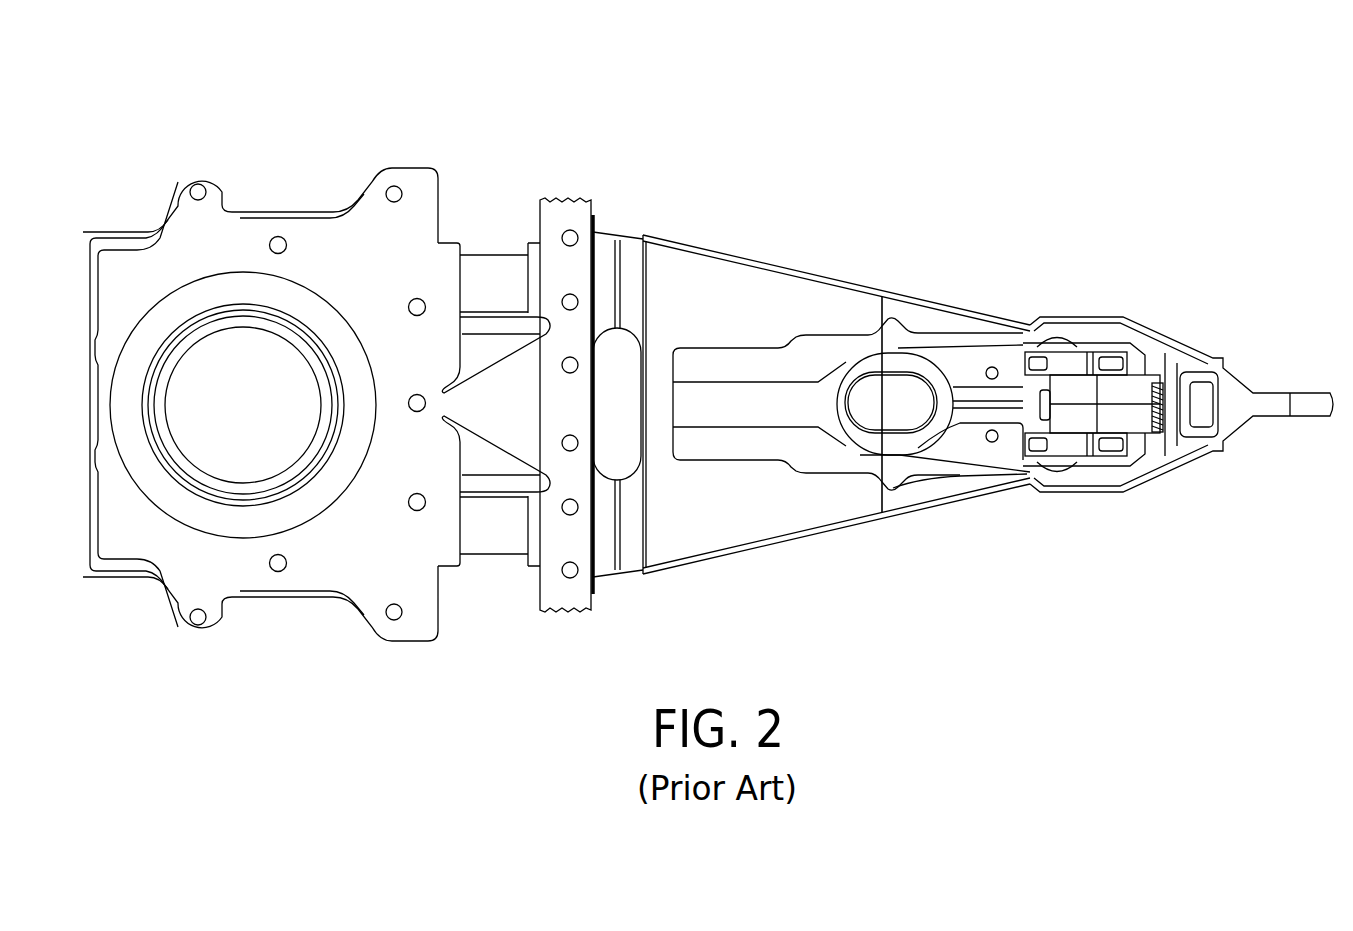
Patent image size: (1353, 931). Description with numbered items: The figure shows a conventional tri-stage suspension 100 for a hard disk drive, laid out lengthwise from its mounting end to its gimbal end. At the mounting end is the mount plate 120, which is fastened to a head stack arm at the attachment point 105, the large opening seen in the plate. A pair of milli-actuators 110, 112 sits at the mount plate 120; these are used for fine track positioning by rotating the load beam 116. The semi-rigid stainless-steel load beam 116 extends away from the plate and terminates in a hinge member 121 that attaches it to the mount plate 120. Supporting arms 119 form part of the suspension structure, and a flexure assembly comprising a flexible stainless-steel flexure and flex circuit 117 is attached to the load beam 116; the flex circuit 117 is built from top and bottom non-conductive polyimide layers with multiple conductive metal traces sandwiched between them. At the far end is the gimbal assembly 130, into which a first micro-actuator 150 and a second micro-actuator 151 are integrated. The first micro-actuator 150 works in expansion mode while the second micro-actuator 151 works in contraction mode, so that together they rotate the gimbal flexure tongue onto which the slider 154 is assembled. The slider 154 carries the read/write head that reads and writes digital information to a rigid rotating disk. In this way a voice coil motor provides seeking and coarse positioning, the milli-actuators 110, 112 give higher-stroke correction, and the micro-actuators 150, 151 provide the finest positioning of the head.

The tri-stage suspension 100 is at (675, 155).
The attachment point 105 is at (205, 340).
The actuator 110 is at (485, 277).
The actuator 112 is at (497, 532).
The load beam 116 is at (740, 257).
The flex circuit 117 is at (978, 388).
The supporting arms 119 is at (963, 472).
The mount plate 120 is at (175, 558).
The hinge member 121 is at (617, 537).
The gimbal assembly 130 is at (1160, 325).
The first micro-actuator 150 is at (1072, 363).
The second micro-actuator 151 is at (1072, 447).
The slider 154 is at (1122, 395).